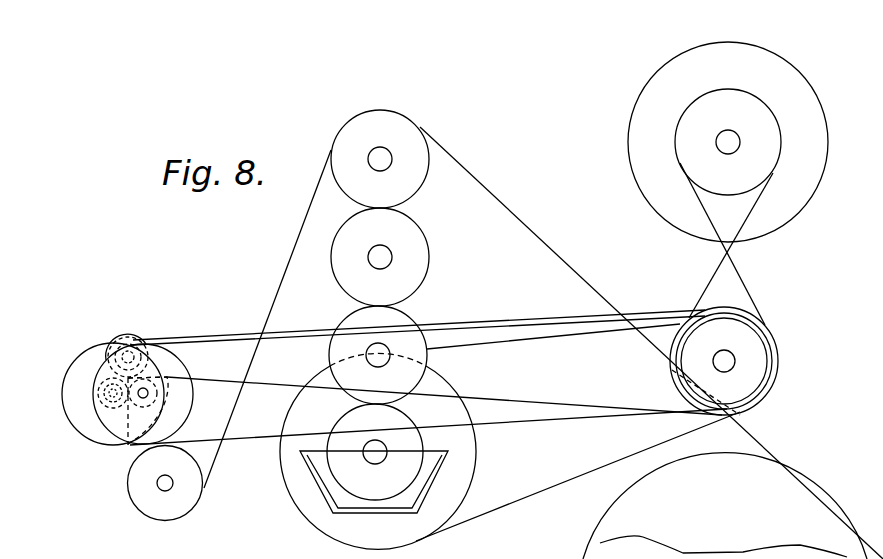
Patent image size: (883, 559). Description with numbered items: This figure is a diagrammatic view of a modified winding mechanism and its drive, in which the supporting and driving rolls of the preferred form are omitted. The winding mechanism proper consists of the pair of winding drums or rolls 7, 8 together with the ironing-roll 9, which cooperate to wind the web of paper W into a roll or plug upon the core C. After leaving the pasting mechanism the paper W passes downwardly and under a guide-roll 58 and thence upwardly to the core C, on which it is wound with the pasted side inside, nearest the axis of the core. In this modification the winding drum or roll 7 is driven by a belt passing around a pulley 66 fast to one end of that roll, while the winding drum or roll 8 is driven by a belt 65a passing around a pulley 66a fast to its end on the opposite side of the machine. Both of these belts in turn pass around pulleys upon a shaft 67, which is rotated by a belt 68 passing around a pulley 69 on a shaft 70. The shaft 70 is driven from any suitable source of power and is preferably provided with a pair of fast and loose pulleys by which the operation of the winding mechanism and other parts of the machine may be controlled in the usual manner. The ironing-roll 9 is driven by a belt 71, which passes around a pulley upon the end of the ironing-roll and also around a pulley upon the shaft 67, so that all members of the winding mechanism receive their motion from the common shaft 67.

The web of paper W is at (284, 276).
The core C is at (133, 378).
The winding drum or roll 7 is at (100, 393).
The winding drum or roll 8 is at (160, 391).
The ironing-roll 9 is at (132, 336).
The guide-roll 58 is at (165, 483).
The belt 65a is at (272, 440).
The pulley 66 is at (72, 420).
The pulley 66a is at (188, 410).
The shaft 67 is at (733, 367).
The belt 68 is at (743, 283).
The pulley 69 is at (728, 142).
The shaft 70 is at (736, 146).
The belt 71 is at (224, 339).